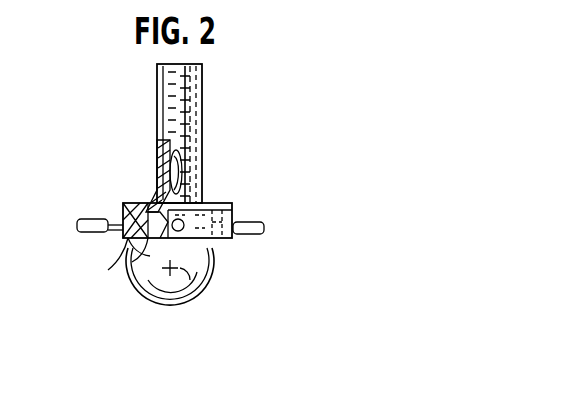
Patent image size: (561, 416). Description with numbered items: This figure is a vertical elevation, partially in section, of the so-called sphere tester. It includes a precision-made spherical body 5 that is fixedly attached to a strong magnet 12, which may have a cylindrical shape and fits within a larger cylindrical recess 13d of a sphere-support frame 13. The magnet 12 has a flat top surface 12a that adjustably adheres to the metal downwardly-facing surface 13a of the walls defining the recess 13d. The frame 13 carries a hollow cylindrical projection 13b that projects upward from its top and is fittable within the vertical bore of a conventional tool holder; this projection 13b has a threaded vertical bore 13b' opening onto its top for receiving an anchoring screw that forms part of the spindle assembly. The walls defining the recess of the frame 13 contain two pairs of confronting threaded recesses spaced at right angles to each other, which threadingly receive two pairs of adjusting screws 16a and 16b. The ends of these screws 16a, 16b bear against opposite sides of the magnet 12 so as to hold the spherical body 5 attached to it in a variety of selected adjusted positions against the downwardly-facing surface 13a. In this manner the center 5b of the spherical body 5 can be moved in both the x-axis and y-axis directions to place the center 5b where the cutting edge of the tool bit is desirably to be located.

The spherical body 5 is at (130, 300).
The center of the spherical body 5b is at (190, 240).
The magnet 12 is at (128, 242).
The flat top surface of the magnet 12a is at (130, 196).
The sphere-support frame 13 is at (133, 184).
The downwardly-facing surface 13a is at (125, 201).
The hollow cylindrical projection 13b is at (228, 133).
The threaded vertical bore 13b' is at (147, 141).
The cylindrical recess 13d is at (130, 246).
The adjusting screws 16a is at (80, 230).
The adjusting screws 16b is at (180, 266).